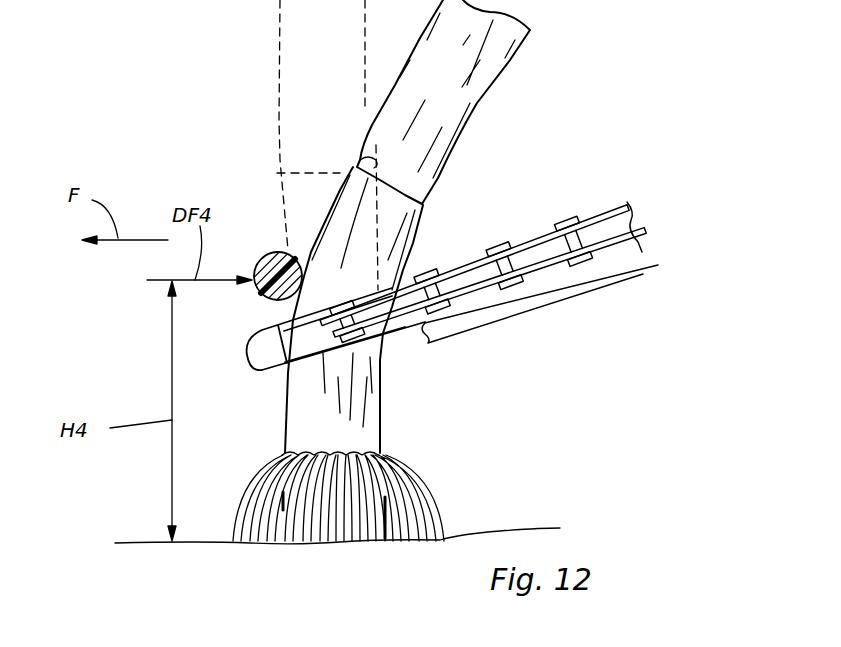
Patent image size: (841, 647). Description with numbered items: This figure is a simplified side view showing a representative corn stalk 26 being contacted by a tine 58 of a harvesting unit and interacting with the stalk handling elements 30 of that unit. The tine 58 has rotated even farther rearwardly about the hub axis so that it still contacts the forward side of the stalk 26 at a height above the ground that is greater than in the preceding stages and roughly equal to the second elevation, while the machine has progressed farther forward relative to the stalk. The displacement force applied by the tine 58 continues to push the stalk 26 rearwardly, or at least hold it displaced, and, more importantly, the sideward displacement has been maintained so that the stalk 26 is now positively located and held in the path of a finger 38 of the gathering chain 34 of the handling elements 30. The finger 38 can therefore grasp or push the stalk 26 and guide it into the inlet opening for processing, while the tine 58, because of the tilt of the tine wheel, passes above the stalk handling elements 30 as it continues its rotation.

The stalk 26 is at (495, 82).
The stalk handling elements 30 is at (489, 244).
The gathering chain 34 is at (540, 304).
The finger 38 is at (250, 358).
The tine 58 is at (268, 253).